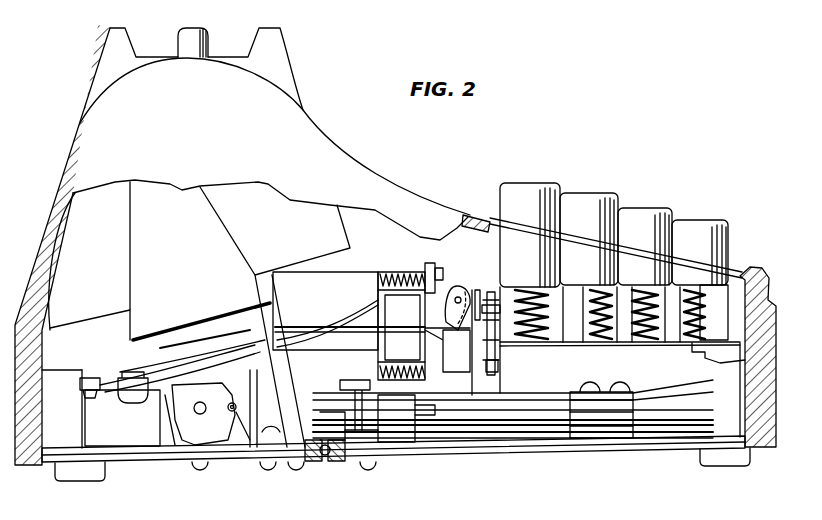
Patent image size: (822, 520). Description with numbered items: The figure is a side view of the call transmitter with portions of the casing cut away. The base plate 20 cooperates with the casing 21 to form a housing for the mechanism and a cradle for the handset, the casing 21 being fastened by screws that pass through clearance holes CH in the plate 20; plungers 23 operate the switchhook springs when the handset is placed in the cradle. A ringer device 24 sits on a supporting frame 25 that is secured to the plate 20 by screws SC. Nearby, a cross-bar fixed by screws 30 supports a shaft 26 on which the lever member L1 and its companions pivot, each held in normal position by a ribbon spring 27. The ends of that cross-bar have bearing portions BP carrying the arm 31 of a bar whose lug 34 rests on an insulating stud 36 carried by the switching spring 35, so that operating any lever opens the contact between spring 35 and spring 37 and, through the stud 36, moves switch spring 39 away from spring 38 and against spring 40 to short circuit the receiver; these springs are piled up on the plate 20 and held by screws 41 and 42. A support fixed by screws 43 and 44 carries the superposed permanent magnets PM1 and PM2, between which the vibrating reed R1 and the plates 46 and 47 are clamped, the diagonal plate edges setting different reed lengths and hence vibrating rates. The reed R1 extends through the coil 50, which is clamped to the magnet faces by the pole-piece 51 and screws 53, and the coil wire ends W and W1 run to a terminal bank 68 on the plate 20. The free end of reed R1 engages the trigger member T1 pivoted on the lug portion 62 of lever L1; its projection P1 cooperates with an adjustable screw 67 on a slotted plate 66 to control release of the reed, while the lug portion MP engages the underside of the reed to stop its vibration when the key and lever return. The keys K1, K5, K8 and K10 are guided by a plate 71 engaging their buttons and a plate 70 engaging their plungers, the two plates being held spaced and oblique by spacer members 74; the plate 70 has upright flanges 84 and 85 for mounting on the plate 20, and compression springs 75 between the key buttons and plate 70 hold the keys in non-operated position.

The base plate 20 is at (632, 448).
The casing 21 is at (340, 163).
The plunger 23 is at (203, 40).
The ringer device 24 is at (275, 231).
The supporting frame 25 is at (116, 261).
The shaft 26 is at (200, 414).
The ribbon spring 27 is at (248, 422).
The screw 30 is at (230, 411).
The arm 31 is at (286, 417).
The lug 34 is at (343, 382).
The switching spring 35 is at (474, 412).
The stud 36 is at (385, 442).
The switch spring 37 is at (433, 403).
The switch spring 38 is at (490, 422).
The switch spring 39 is at (380, 442).
The switch spring 40 is at (352, 442).
The screw 41 is at (582, 383).
The screw 42 is at (625, 383).
The screw 43 is at (310, 462).
The screw 44 is at (360, 442).
The plate 46 is at (285, 327).
The plate 47 is at (298, 330).
The coil 50 is at (401, 326).
The pole-piece 51 is at (430, 273).
The screw 53 is at (443, 278).
The lug portion 62 is at (447, 351).
The plate 66 is at (483, 311).
The adjustable screw 67 is at (498, 364).
The terminal bank 68 is at (122, 418).
The plate 70 is at (772, 312).
The plate 71 is at (733, 252).
The spacer member 74 is at (715, 297).
The compression spring 75 is at (628, 333).
The upright flange 84 is at (735, 352).
The upright flange 85 is at (735, 382).
The bearing portion BP is at (245, 455).
The clearance hole CH is at (322, 462).
The key member K1 is at (530, 235).
The key member K5 is at (589, 239).
The key member K8 is at (645, 246).
The key member K10 is at (700, 280).
The lever member L1 is at (170, 400).
The projecting lug portion MP is at (443, 330).
The projection P1 is at (491, 300).
The permanent magnet PM1 is at (345, 330).
The permanent magnet PM2 is at (345, 277).
The vibrating reed R1 is at (440, 298).
The screw SC is at (70, 445).
The trigger member T1 is at (472, 294).
The coil wire end W is at (104, 378).
The coil wire end W1 is at (150, 376).